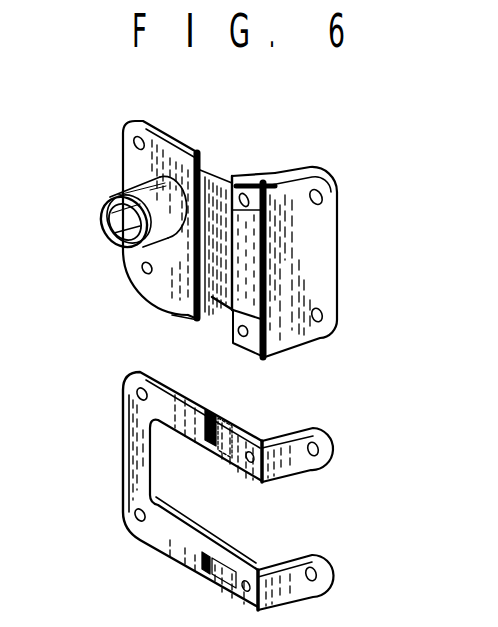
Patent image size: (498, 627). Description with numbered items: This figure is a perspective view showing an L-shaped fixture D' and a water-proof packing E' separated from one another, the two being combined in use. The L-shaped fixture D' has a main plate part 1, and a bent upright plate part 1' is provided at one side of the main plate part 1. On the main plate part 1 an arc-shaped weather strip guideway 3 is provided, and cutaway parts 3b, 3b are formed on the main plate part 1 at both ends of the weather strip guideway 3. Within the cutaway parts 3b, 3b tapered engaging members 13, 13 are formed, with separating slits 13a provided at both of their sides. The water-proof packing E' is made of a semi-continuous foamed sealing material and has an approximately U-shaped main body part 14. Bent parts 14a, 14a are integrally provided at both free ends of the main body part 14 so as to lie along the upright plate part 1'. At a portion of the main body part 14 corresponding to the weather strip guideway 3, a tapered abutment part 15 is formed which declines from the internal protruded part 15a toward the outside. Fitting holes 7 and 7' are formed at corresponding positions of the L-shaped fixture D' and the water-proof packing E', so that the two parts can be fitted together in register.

The L-shaped fixture D' is at (223, 227).
The main plate part 1 is at (159, 194).
The bent upright plate part 1' is at (330, 262).
The weather strip guideway 3 is at (213, 258).
The cutaway parts 3b is at (227, 172).
The fitting hole 7 is at (105, 260).
The tapered engaging members 13 is at (283, 210).
The separating slits 13a is at (203, 165).
The water-proof packing E' is at (231, 498).
The main body part 14 is at (133, 477).
The bent parts 14a is at (307, 467).
The tapered abutment part 15 is at (228, 427).
The internal protruded part 15a is at (215, 450).
The fitting hole 7' is at (343, 533).